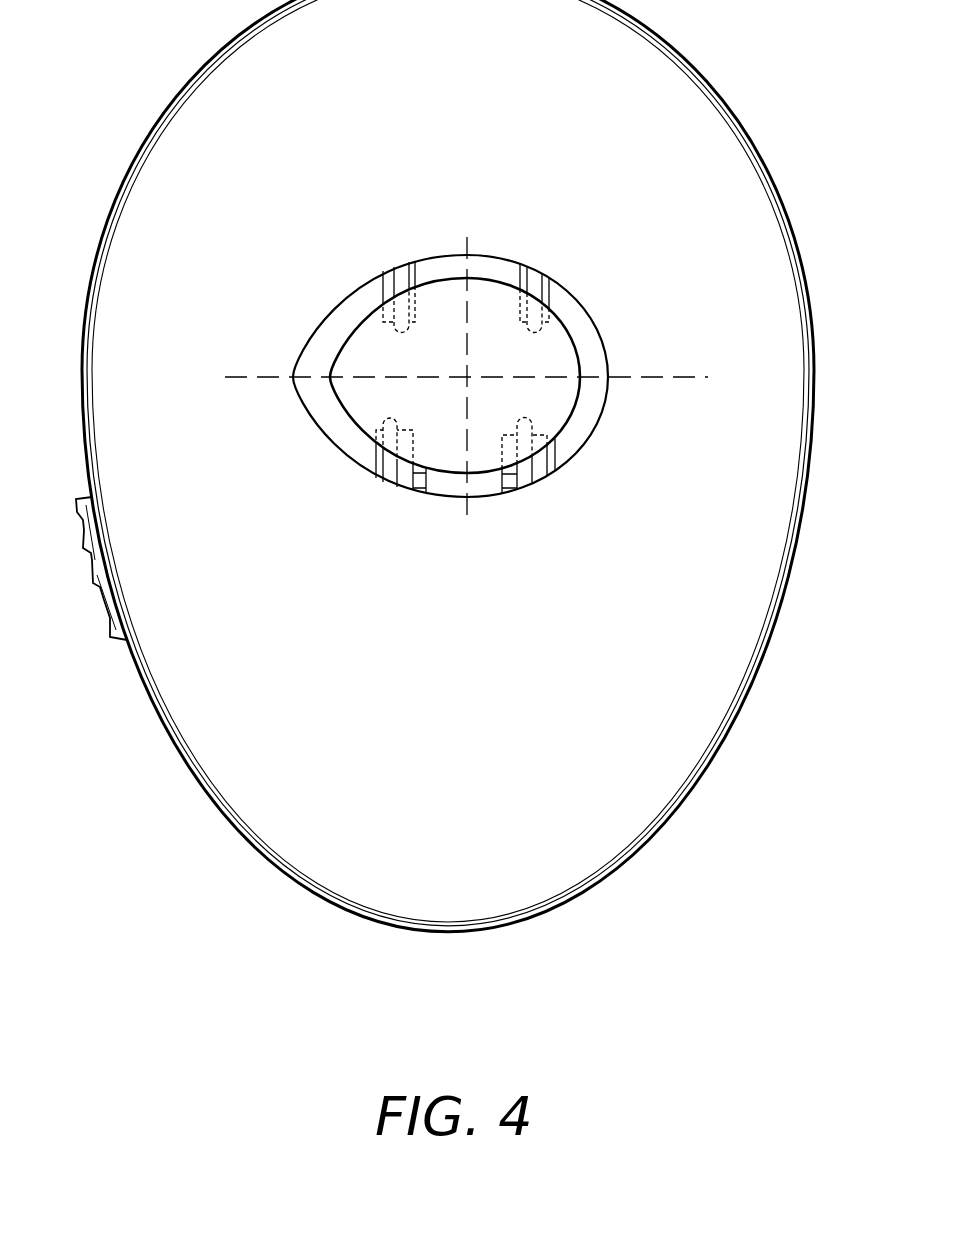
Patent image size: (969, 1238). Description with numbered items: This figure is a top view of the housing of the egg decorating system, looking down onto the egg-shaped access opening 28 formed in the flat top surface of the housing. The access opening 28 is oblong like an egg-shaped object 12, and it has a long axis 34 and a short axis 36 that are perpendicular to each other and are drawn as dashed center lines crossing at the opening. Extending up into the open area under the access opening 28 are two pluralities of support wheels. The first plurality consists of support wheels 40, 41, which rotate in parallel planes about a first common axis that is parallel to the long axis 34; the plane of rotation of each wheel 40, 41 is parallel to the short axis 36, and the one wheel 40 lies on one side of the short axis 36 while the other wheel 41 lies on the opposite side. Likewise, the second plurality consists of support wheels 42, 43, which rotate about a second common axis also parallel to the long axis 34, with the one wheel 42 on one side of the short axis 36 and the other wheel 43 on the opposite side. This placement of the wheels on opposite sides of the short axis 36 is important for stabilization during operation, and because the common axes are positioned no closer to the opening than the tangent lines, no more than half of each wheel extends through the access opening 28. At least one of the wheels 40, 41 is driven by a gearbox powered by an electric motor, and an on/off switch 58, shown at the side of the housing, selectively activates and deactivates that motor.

The egg-shaped object 12 is at (578, 350).
The egg-shaped access opening 28 is at (332, 312).
The long axis 34 is at (637, 380).
The short axis 36 is at (465, 250).
The support wheel 40 is at (398, 282).
The support wheel 41 is at (533, 280).
The support wheel 42 is at (392, 478).
The support wheel 43 is at (538, 482).
The on/off switch 58 is at (85, 523).